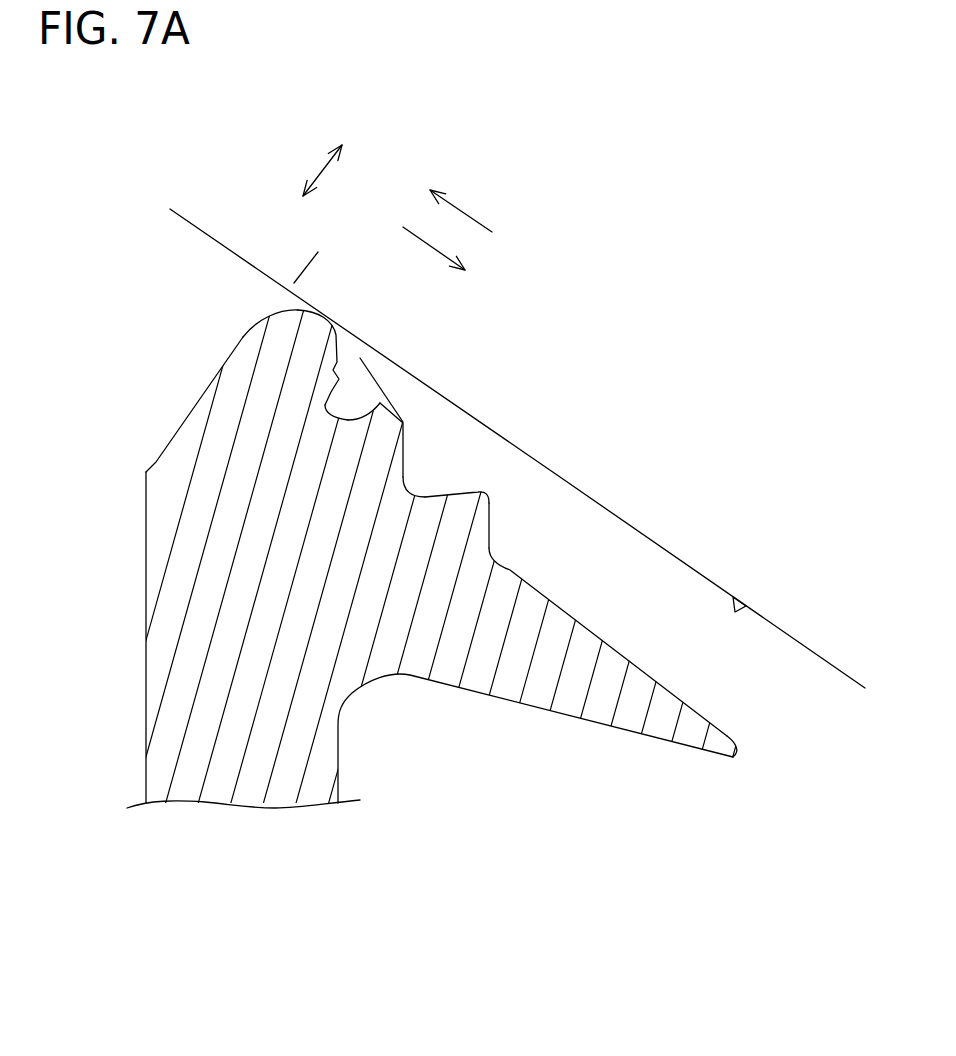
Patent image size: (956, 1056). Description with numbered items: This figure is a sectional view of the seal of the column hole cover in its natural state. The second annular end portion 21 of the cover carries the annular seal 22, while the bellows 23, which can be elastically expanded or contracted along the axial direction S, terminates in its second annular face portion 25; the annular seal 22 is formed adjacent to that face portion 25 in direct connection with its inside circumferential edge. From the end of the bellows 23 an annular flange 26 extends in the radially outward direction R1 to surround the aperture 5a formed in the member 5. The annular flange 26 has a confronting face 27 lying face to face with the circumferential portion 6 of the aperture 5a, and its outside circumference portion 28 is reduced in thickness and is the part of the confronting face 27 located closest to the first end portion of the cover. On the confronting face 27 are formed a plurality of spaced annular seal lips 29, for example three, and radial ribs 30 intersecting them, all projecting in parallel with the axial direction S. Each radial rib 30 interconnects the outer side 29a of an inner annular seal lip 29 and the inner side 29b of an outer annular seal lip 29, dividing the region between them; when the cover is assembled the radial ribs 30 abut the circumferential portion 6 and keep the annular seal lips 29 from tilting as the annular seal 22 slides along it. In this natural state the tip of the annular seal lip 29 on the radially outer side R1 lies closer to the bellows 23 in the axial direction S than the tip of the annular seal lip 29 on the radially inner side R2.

The shaft 5 is at (303, 272).
The aperture 5a is at (183, 220).
The circumferential portion 6 is at (748, 606).
The second annular end portion 21 is at (206, 431).
The annular seal 22 is at (390, 427).
The bellows 23 is at (138, 657).
The second annular face portion 25 is at (178, 728).
The annular flange 26 is at (528, 612).
The confronting face 27 is at (579, 623).
The outside circumference portion 28 is at (738, 752).
The annular seal lip 29 is at (313, 328).
The outer side 29a is at (337, 376).
The inner side 29b is at (277, 320).
The radial rib 30 is at (310, 442).
The axial direction S is at (320, 168).
The radially outward direction R1 is at (425, 230).
The radially inner side R2 is at (468, 216).